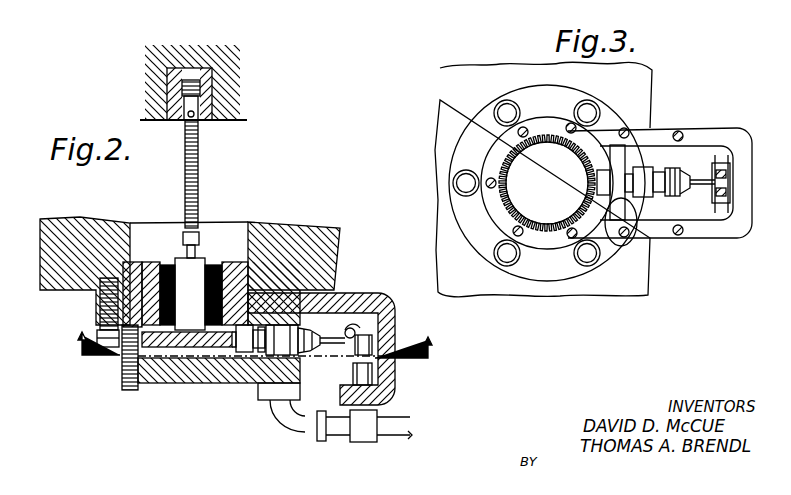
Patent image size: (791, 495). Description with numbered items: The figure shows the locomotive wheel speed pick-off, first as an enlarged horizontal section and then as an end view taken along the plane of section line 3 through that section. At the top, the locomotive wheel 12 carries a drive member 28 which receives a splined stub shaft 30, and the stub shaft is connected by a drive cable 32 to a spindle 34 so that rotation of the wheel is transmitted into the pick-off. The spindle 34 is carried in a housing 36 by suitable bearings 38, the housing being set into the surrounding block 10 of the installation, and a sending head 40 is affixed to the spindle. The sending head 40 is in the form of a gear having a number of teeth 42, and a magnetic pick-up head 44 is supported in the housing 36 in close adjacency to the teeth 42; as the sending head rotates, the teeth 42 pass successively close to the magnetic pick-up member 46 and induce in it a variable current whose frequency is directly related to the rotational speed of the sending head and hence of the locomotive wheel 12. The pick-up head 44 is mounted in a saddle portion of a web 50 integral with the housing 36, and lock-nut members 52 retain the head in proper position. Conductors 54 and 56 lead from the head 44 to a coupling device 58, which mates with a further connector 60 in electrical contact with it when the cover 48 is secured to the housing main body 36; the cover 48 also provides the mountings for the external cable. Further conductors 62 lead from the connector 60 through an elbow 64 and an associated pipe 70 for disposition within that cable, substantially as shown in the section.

In FIG. 2, the housing block 10 is at (298, 232).
In FIG. 2, the locomotive wheel 12 is at (228, 118).
In FIG. 2, the drive member 28 is at (208, 62).
In FIG. 2, the splined stub shaft 30 is at (196, 99).
In FIG. 2, the drive cable 32 is at (199, 154).
In FIG. 2, the spindle 34 is at (187, 263).
In FIG. 2, the housing 36 is at (322, 300).
In FIG. 3, the housing 36 is at (712, 138).
In FIG. 2, the bearings 38 is at (160, 292).
In FIG. 2, the sending head 40 is at (214, 341).
In FIG. 3, the sending head 40 is at (548, 150).
In FIG. 3, the teeth 42 is at (585, 175).
In FIG. 3, the magnetic pick-up head 44 is at (655, 150).
In FIG. 3, the magnetic pick-up member 46 is at (586, 196).
In FIG. 2, the cover 48 is at (237, 376).
In FIG. 3, the web 50 is at (647, 168).
In FIG. 3, the lock-nut members 52 is at (625, 246).
In FIG. 2, the conductor 54 is at (356, 310).
In FIG. 2, the conductor 56 is at (374, 331).
In FIG. 2, the coupling device 58 is at (373, 344).
In FIG. 2, the connector 60 is at (372, 378).
In FIG. 2, the further conductors 62 is at (338, 410).
In FIG. 2, the elbow 64 is at (300, 417).
In FIG. 2, the pipe 70 is at (330, 428).
In FIG. 2, the section line 3— 3 is at (254, 354).